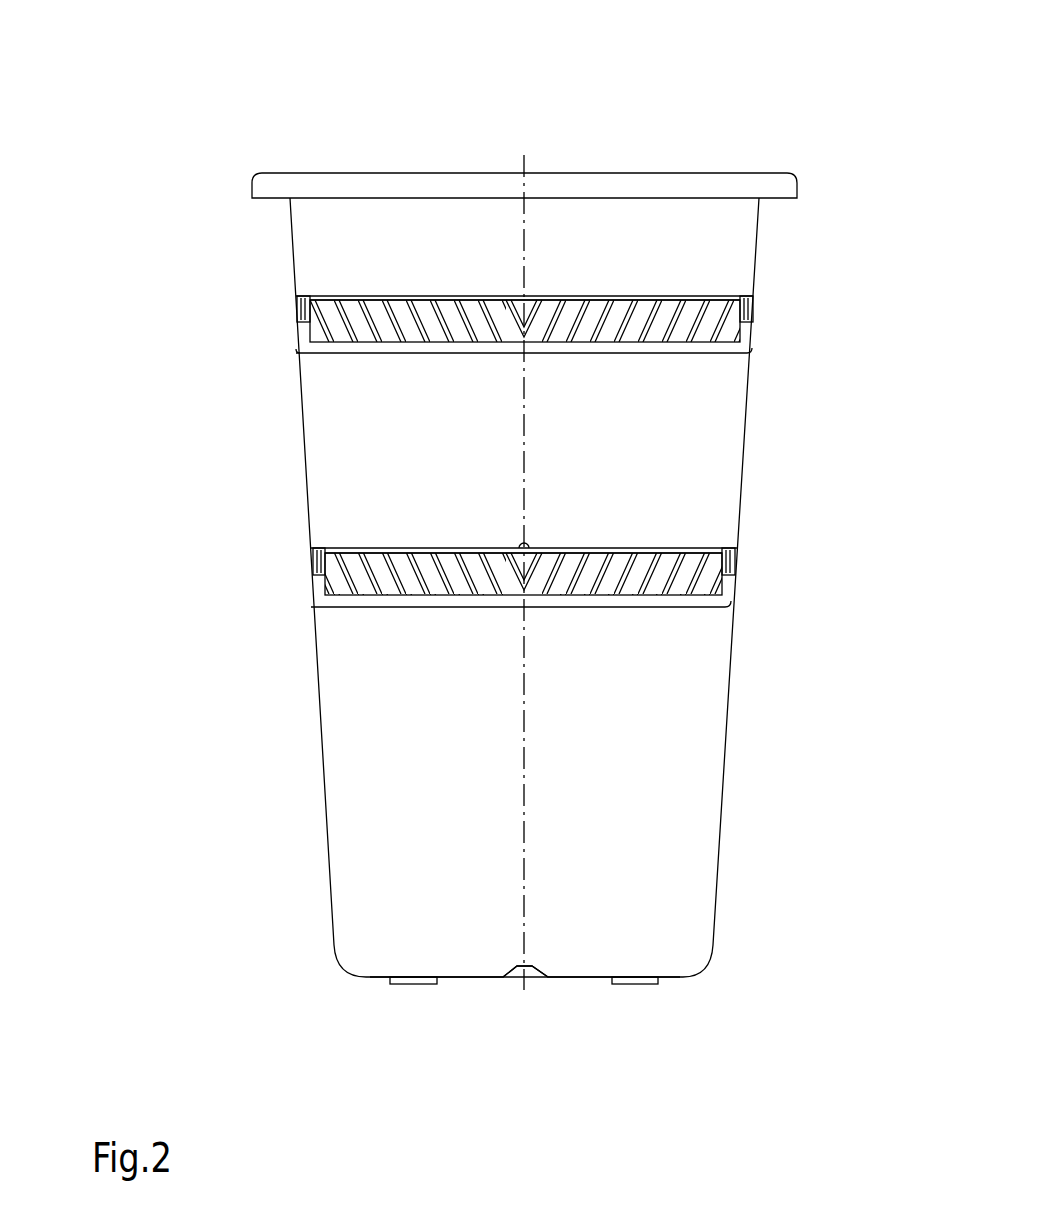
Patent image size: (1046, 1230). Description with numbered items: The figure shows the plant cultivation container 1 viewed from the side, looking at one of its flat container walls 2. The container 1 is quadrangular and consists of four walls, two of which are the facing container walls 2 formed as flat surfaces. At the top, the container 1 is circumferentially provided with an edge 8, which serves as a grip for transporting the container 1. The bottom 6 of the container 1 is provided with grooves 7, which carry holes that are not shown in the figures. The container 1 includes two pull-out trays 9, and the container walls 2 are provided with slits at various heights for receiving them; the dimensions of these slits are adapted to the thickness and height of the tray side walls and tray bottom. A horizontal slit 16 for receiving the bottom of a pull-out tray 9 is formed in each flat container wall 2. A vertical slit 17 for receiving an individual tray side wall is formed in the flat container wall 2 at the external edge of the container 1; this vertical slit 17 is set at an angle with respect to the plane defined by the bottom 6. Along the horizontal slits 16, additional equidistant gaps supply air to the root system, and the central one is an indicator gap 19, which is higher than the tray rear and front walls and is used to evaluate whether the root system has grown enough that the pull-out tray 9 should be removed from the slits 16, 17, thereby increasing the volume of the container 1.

The plant cultivation container 1 is at (502, 579).
The container wall 2 is at (420, 247).
The bottom 6 is at (589, 978).
The groove 7 is at (519, 972).
The edge 8 is at (798, 189).
The pull-out tray 9 is at (306, 333).
The horizontal slit 16 is at (706, 606).
The vertical slit 17 is at (613, 205).
The indicator gap 19 is at (524, 298).